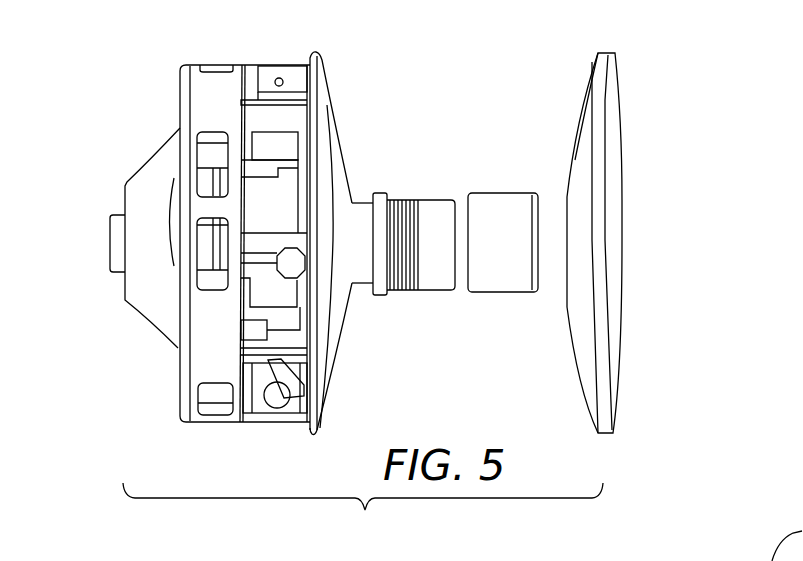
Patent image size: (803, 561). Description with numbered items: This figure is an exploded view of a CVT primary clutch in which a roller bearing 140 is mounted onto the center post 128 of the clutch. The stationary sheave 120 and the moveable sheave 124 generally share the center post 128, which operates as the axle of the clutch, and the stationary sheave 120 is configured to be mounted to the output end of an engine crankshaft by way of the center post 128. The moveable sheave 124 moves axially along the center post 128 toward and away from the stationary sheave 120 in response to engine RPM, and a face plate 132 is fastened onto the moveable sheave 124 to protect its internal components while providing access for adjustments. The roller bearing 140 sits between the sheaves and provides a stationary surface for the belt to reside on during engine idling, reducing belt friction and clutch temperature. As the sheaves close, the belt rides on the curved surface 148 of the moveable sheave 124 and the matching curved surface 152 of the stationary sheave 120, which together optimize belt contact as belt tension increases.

The stationary sheave 120 is at (620, 195).
The moveable sheave 124 is at (216, 80).
The center post 128 is at (108, 247).
The face plate 132 is at (178, 397).
The roller bearing 140 is at (498, 193).
The curved surface 148 is at (340, 348).
The curved surface 152 is at (580, 108).